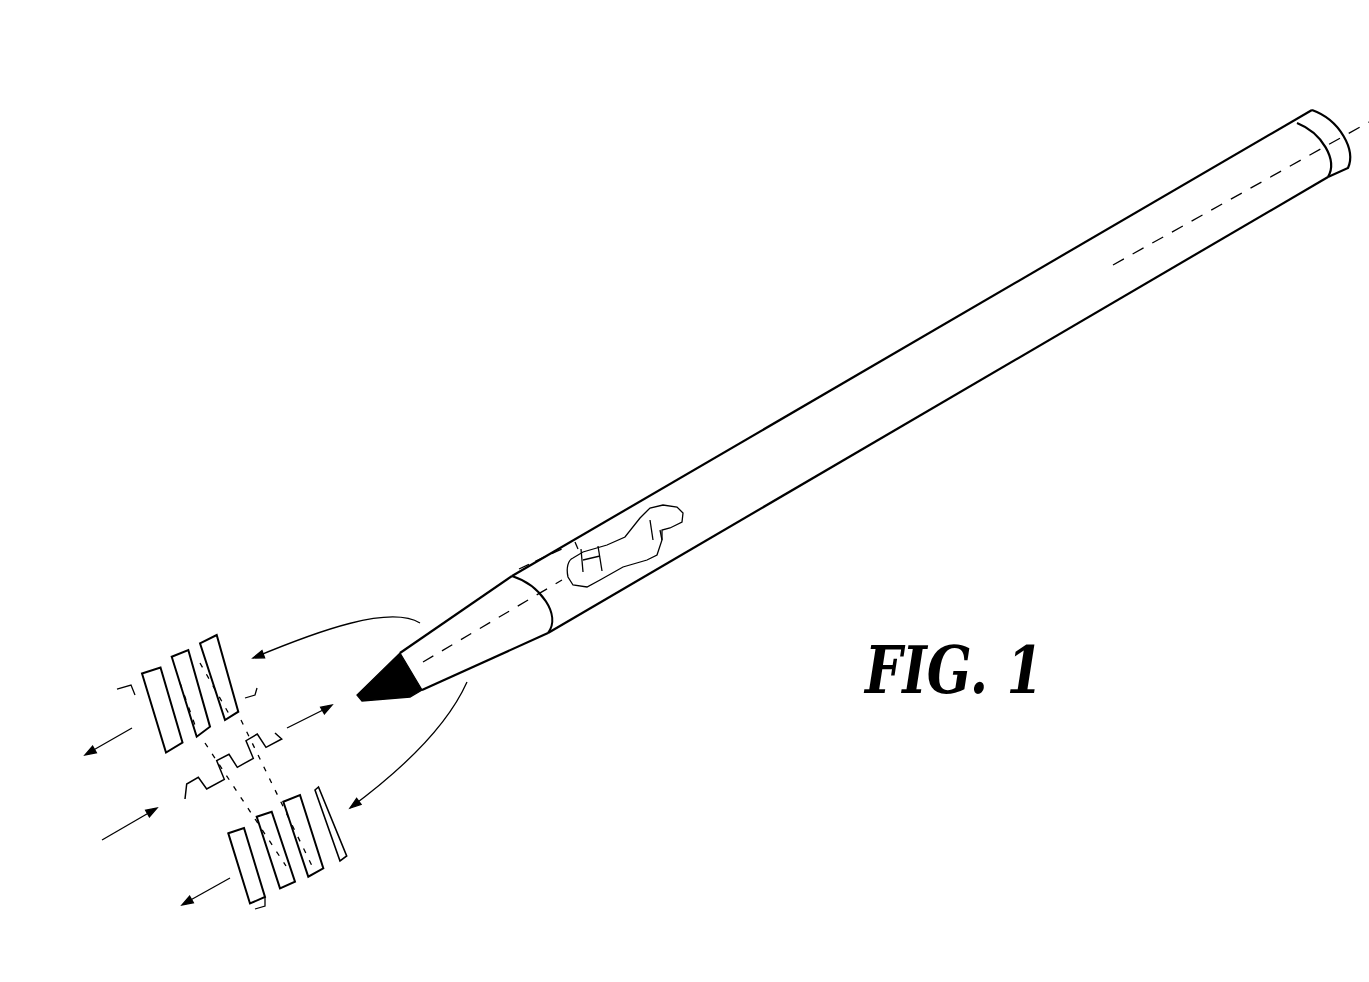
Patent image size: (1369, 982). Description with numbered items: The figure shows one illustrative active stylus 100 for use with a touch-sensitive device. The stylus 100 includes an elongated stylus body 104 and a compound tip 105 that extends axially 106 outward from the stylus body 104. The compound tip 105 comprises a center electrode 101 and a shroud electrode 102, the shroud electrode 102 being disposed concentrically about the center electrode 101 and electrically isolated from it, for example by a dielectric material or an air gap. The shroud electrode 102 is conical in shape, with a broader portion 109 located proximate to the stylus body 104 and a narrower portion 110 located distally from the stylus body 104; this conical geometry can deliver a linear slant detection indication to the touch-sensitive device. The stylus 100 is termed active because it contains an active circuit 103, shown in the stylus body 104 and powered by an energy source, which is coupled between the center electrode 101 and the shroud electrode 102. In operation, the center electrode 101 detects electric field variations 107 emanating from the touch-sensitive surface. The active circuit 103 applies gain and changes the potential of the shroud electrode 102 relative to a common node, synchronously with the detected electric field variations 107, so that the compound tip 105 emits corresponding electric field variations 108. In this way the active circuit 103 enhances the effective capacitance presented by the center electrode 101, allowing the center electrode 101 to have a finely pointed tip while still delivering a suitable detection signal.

The stylus 100 is at (548, 438).
The center electrode 101 is at (362, 700).
The shroud electrode 102 is at (454, 620).
The active circuit 103 is at (660, 561).
The stylus body 104 is at (995, 343).
The compound tip 105 is at (398, 583).
The axial direction 106 is at (1360, 120).
The electric field variations 107 is at (207, 790).
The corresponding electric field variations 108 is at (205, 637).
The broader portion 109 is at (548, 646).
The narrower portion 110 is at (430, 700).